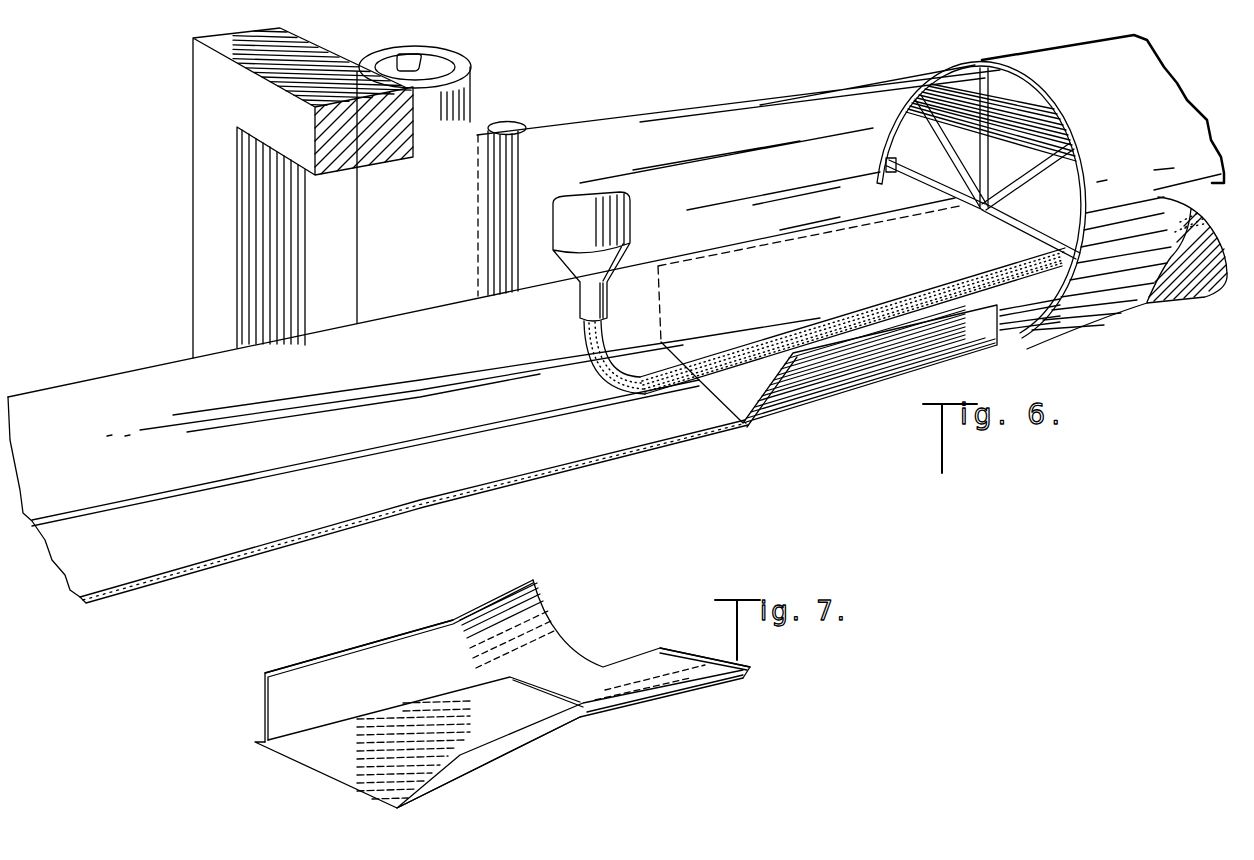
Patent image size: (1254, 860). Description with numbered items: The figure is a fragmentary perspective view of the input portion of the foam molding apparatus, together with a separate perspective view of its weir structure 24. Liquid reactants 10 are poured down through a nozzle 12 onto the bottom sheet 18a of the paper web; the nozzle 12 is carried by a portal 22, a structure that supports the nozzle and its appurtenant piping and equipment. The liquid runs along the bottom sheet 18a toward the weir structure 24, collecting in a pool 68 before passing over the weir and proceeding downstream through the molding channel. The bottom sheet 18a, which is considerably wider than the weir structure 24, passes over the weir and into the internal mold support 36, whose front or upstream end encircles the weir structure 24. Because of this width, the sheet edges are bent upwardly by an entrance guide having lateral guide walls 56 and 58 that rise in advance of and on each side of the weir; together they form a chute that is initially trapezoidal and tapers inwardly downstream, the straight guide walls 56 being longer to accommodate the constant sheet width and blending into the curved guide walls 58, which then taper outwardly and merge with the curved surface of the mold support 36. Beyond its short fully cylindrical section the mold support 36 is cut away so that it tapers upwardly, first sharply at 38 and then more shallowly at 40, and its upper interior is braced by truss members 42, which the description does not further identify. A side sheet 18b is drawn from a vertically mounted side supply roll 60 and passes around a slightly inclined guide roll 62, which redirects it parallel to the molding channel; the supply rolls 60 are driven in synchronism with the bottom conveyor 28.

In FIG. 6, the liquid reactants 10 is at (585, 341).
In FIG. 6, the nozzle 12 is at (580, 305).
In FIG. 6, the bottom sheet 18a is at (181, 477).
In FIG. 6, the side sheet 18b is at (708, 106).
In FIG. 6, the portal 22 is at (203, 92).
In FIG. 6, the weir structure 24 is at (985, 350).
In FIG. 7, the weir structure 24 is at (596, 747).
In FIG. 6, the bottom conveyor 28 is at (443, 488).
In FIG. 6, the mold support 36 is at (1058, 52).
In FIG. 6, the sharply tapered portion 38 is at (1095, 202).
In FIG. 6, the shallowly tapered portion 40 is at (1207, 181).
In FIG. 6, the spokes 42 is at (932, 158).
In FIG. 6, the straight lateral guide wall 56 is at (860, 378).
In FIG. 7, the straight lateral guide wall 56 is at (390, 655).
In FIG. 7, the curved lateral guide wall 58 is at (510, 603).
In FIG. 6, the side supply roll 60 is at (458, 88).
In FIG. 6, the guide roll 62 is at (515, 124).
In FIG. 6, the pool 68 is at (883, 323).